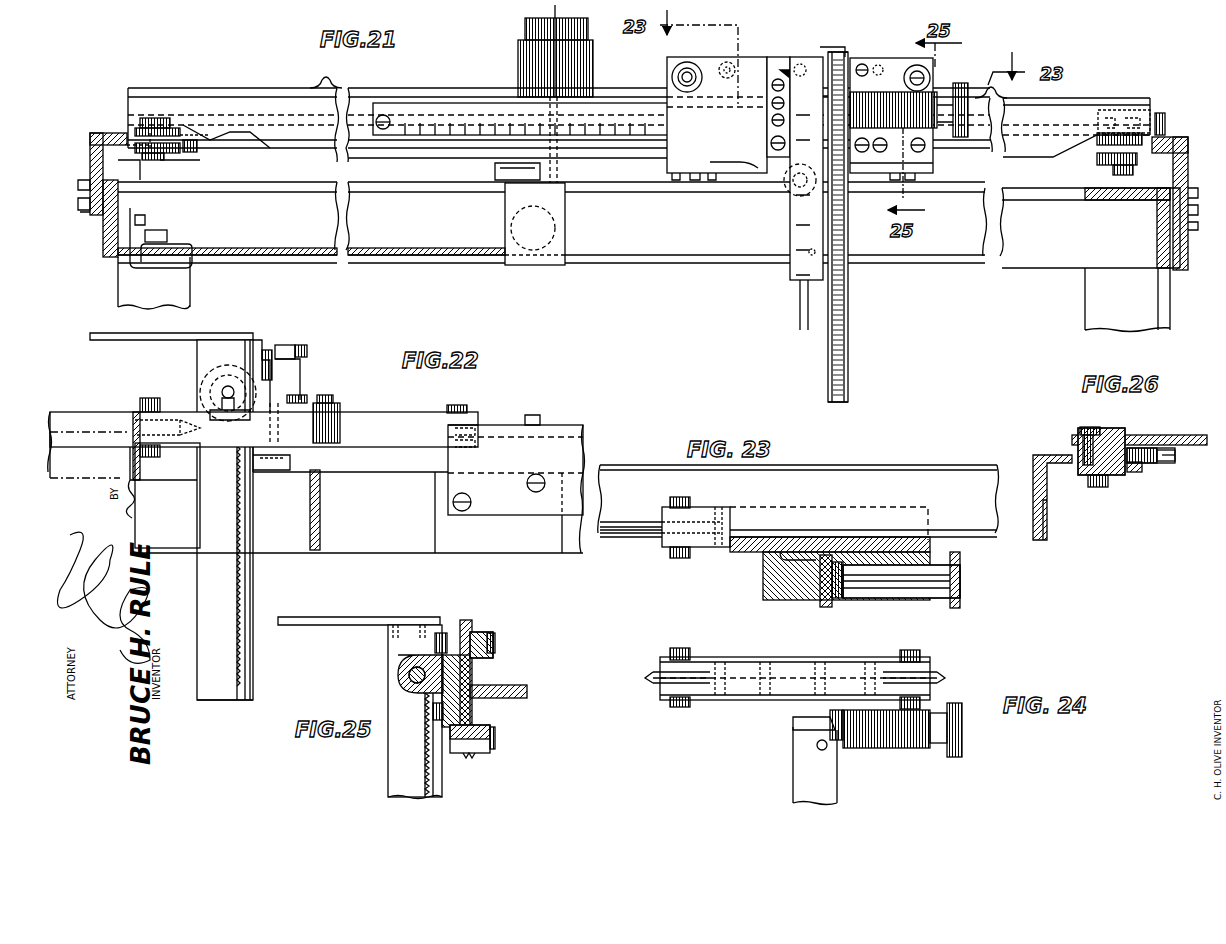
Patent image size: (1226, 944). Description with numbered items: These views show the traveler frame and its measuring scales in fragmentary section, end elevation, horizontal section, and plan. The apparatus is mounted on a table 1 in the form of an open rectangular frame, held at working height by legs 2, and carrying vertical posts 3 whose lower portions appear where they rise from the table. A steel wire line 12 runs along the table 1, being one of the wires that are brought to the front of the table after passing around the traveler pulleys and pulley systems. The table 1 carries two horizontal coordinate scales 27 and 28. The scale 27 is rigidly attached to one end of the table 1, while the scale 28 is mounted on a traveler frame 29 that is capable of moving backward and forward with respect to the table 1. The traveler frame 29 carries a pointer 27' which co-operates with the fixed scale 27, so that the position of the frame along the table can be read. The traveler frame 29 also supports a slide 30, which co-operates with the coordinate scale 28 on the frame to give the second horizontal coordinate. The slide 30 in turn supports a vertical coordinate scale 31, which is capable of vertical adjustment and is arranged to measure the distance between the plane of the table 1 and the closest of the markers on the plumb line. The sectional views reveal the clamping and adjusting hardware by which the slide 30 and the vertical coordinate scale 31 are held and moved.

In FIG. 21, the table 1 is at (100, 255).
In FIG. 22, the table 1 is at (348, 530).
In FIG. 21, the legs 2 is at (108, 300).
In FIG. 21, the vertical posts 3 is at (522, 30).
In FIG. 21, the steel wire line 12 is at (378, 253).
In FIG. 21, the horizontal coordinate scale 27 is at (1141, 182).
In FIG. 22, the horizontal coordinate scale 27 is at (316, 459).
In FIG. 21, the pointer 27' is at (1131, 121).
In FIG. 22, the pointer 27' is at (194, 422).
In FIG. 21, the horizontal coordinate scale 28 is at (425, 113).
In FIG. 22, the horizontal coordinate scale 28 is at (270, 403).
In FIG. 23, the horizontal coordinate scale 28 is at (638, 535).
In FIG. 25, the horizontal coordinate scale 28 is at (473, 673).
In FIG. 21, the traveler frame 29 is at (478, 95).
In FIG. 22, the traveler frame 29 is at (307, 360).
In FIG. 23, the traveler frame 29 is at (982, 527).
In FIG. 25, the traveler frame 29 is at (470, 677).
In FIG. 26, the traveler frame 29 is at (1075, 438).
In FIG. 21, the slide 30 is at (748, 66).
In FIG. 22, the slide 30 is at (267, 348).
In FIG. 23, the slide 30 is at (737, 550).
In FIG. 24, the slide 30 is at (747, 673).
In FIG. 25, the slide 30 is at (450, 628).
In FIG. 21, the vertical coordinate scale 31 is at (803, 230).
In FIG. 23, the vertical coordinate scale 31 is at (803, 563).
In FIG. 24, the vertical coordinate scale 31 is at (793, 717).